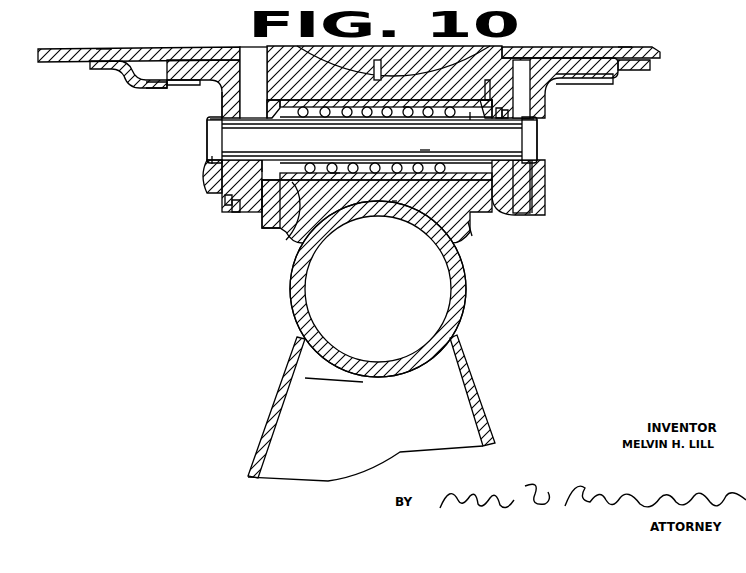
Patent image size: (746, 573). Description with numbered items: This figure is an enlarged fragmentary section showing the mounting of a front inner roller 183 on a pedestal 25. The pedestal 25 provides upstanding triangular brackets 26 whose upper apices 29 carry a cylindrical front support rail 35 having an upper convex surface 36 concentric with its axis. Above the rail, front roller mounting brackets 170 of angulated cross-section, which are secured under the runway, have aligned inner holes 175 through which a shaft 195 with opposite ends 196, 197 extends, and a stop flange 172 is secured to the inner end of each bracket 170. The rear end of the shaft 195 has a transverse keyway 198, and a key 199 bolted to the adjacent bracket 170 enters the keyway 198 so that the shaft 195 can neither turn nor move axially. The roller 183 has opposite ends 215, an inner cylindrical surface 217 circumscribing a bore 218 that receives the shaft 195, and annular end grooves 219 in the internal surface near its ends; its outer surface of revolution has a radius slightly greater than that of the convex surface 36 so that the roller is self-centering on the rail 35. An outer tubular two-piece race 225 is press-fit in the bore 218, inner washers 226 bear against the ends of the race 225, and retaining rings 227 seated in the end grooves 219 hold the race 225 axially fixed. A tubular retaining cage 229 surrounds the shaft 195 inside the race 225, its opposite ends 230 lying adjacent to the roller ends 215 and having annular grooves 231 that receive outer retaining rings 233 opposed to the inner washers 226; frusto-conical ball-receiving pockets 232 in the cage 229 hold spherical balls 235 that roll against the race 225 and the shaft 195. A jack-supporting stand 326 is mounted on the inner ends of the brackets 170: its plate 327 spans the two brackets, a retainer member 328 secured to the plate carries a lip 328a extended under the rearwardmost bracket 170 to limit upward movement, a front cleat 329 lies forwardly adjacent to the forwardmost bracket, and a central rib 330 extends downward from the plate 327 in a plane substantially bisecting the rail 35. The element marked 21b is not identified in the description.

The jack-supporting stand 326 is at (66, 48).
The plate 327 is at (102, 49).
The retainer member 328 is at (92, 67).
The lip 328a is at (158, 89).
The front cleat 329 is at (650, 64).
The stop flange 172 is at (173, 79).
The front roller mounting bracket 170 is at (205, 64).
The central rib 330 is at (378, 62).
The roller end 215 is at (520, 219).
The annular end groove 219 is at (221, 97).
The upper convex surface 36 is at (395, 205).
The outer tubular two-piece race 225 is at (297, 112).
The spherical ball 235 is at (380, 107).
The shaft 195 is at (380, 148).
The shaft end 196 is at (206, 128).
The shaft end 197 is at (523, 139).
The inner hole 175 is at (218, 119).
The keyway 198 is at (213, 159).
The annular groove 231 is at (262, 166).
The ball-receiving pocket 232 is at (405, 110).
The tubular retaining cage 229 is at (425, 150).
The inner washer 226 is at (271, 108).
The retaining ring 227 is at (487, 107).
The outer retaining ring 233 is at (499, 110).
The cage end 230 is at (503, 118).
The key 199 is at (200, 184).
The inner cylindrical surface 217 is at (286, 240).
The bore 218 is at (333, 177).
The front support rail 35 is at (448, 267).
The ring portion 21b is at (394, 202).
The front inner roller 183 is at (476, 230).
The pedestal 25 is at (490, 369).
The bracket 26 is at (392, 409).
The upper apex 29 is at (363, 382).